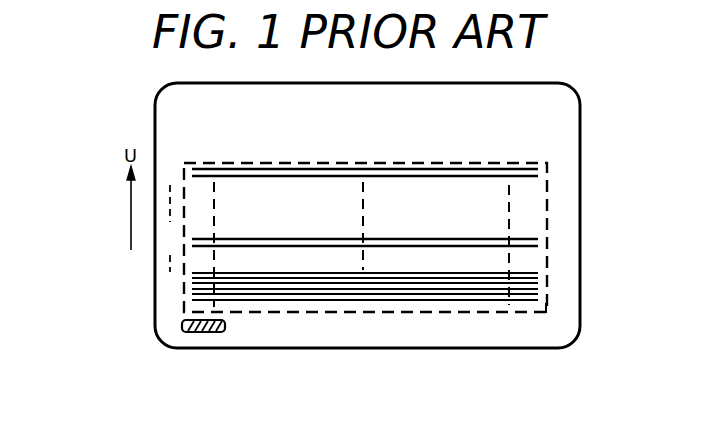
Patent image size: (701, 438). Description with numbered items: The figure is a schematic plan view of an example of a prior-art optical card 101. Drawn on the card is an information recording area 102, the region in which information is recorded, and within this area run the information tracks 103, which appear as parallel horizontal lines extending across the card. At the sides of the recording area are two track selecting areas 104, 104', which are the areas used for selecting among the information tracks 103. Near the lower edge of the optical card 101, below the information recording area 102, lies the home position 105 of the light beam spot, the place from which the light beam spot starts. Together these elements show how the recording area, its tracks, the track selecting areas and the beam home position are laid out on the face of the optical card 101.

The optical card 101 is at (580, 149).
The information recording area 102 is at (307, 188).
The information tracks 103 is at (520, 240).
The track selecting area 104 is at (134, 227).
The track selecting area 104' is at (411, 238).
The home position of a light beam spot 105 is at (205, 333).